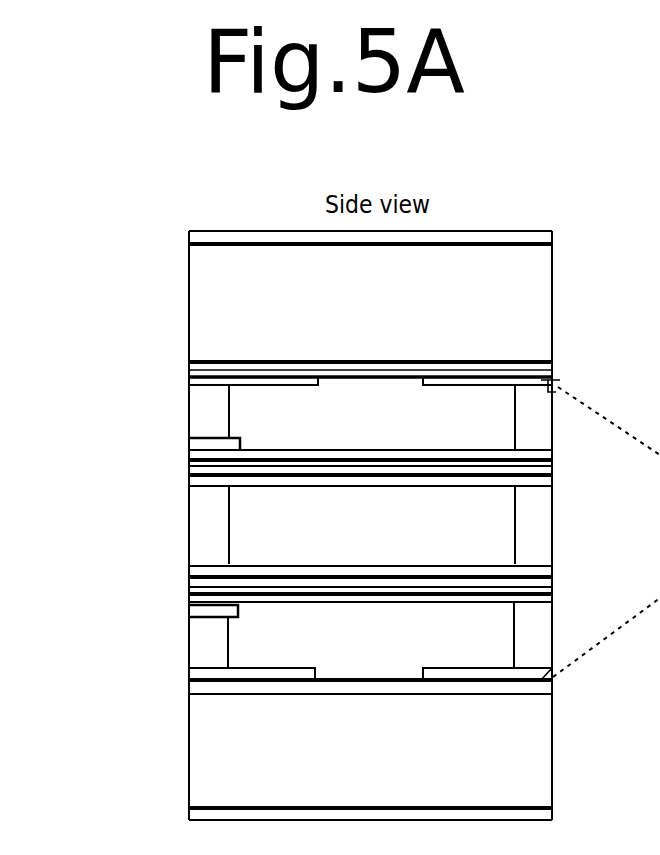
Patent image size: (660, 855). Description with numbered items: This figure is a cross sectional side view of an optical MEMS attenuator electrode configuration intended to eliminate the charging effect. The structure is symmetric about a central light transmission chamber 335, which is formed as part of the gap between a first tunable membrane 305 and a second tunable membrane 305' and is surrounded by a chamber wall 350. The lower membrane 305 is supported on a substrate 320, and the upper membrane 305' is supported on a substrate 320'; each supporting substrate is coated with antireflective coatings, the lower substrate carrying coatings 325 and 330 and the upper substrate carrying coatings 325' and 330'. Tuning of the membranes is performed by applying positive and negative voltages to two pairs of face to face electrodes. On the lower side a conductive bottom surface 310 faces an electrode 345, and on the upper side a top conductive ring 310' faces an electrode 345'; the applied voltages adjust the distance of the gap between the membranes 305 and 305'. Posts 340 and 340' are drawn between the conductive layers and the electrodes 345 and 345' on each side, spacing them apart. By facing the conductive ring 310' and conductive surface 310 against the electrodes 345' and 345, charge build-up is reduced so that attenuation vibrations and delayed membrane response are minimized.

The antireflective coating 330' is at (309, 231).
The substrate 320' is at (309, 303).
The antireflective coating 325' is at (309, 354).
The top conductive ring 310' is at (309, 379).
The top post 340' is at (291, 417).
The electrode 345' is at (153, 447).
The second tunable membrane 305' is at (309, 468).
The chamber wall 350 is at (217, 528).
The light transmission chamber 335 is at (357, 530).
The first tunable membrane 305 is at (309, 584).
The electrode 345 is at (152, 612).
The bottom post 340 is at (290, 635).
The conductive bottom surface 310 is at (309, 666).
The antireflective coating 325 is at (309, 689).
The substrate 320 is at (309, 751).
The antireflective coating 330 is at (308, 815).